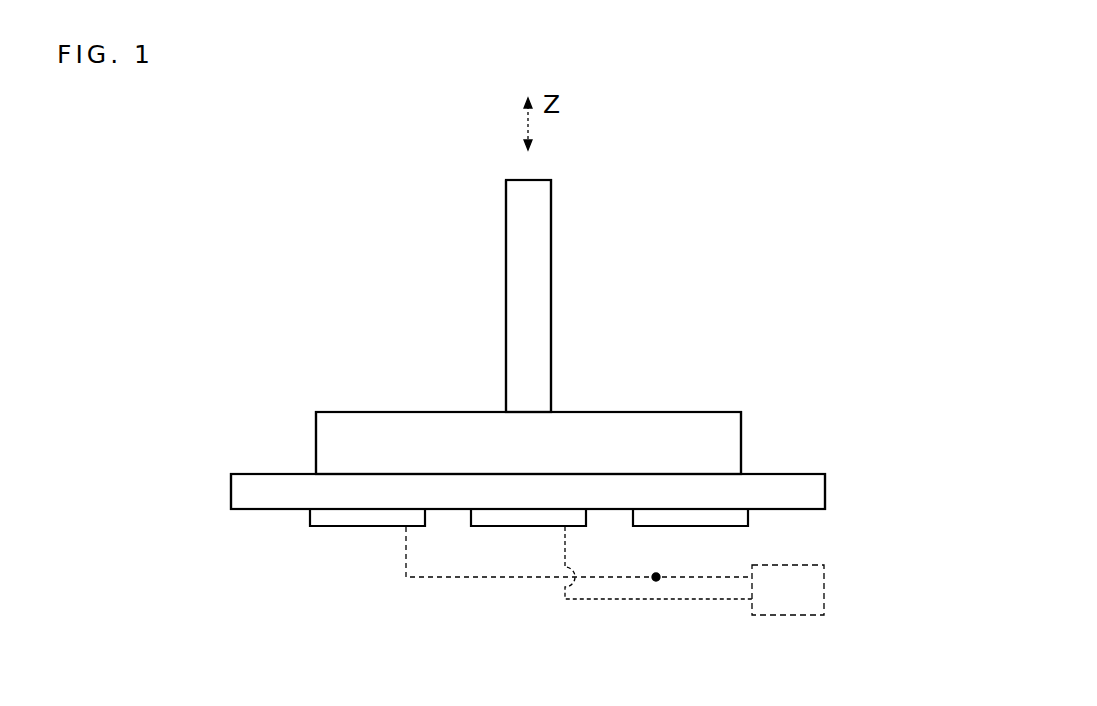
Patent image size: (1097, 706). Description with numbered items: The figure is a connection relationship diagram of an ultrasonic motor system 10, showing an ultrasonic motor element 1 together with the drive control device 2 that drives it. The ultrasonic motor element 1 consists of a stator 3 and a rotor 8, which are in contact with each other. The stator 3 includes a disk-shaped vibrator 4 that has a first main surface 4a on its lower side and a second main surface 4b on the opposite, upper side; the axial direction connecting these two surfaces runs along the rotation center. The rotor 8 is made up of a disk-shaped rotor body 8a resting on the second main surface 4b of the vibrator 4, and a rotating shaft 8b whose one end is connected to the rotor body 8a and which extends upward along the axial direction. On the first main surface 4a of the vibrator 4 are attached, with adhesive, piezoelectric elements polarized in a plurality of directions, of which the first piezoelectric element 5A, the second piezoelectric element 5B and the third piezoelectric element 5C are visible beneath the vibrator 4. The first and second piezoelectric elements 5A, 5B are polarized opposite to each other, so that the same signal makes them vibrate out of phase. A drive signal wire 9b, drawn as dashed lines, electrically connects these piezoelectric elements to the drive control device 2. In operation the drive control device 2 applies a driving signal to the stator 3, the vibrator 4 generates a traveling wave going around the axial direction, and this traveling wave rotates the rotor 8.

The ultrasonic motor system 10 is at (272, 158).
The ultrasonic motor element 1 is at (507, 245).
The rotor 8 is at (326, 447).
The rotor body 8a is at (728, 430).
The rotating shaft 8b is at (537, 322).
The stator 3 is at (243, 491).
The vibrator 4 is at (273, 497).
The first main surface 4a is at (790, 509).
The second main surface 4b is at (767, 473).
The first piezoelectric element 5A is at (688, 518).
The second piezoelectric element 5B is at (365, 518).
The third piezoelectric element 5C is at (526, 518).
The drive signal wire 9b is at (432, 580).
The drive control device 2 is at (825, 580).